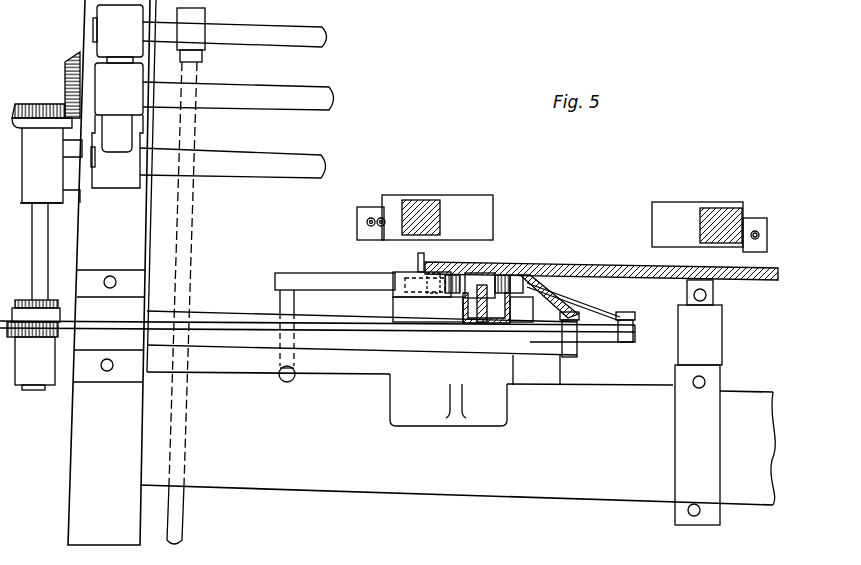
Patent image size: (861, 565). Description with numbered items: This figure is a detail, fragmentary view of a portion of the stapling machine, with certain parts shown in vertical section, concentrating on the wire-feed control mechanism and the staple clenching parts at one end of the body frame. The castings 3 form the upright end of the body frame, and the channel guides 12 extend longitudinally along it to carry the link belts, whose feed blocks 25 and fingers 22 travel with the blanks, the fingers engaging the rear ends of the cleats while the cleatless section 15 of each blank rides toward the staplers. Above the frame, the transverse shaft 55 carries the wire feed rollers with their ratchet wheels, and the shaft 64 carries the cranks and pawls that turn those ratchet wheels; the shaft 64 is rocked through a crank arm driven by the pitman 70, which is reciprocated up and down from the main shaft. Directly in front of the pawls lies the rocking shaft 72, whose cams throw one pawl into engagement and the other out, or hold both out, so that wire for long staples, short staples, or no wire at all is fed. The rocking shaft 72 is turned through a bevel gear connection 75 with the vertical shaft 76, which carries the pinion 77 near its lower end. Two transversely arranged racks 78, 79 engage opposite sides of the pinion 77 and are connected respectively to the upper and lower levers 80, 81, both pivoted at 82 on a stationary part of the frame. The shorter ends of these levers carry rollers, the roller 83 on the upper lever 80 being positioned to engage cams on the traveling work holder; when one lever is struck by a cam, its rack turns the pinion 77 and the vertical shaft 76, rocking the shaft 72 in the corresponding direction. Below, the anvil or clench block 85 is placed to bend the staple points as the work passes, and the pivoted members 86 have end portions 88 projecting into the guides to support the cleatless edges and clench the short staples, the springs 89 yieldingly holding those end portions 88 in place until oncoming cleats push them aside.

The castings 3 is at (89, 534).
The channel guides 12 is at (461, 333).
The blank section 15 is at (578, 270).
The fingers 22 is at (453, 283).
The feed blocks 25 is at (498, 280).
The transverse shaft 55 is at (322, 160).
The shaft 64 is at (326, 32).
The pitman 70 is at (190, 256).
The rocking shaft 72 is at (319, 88).
The bevel gear connection 75 is at (70, 68).
The vertical shaft 76 is at (43, 251).
The pinion 77 is at (34, 338).
The rack 78 is at (233, 340).
The rack 79 is at (233, 322).
The upper lever 80 is at (562, 308).
The lower lever 81 is at (611, 320).
The pivot 82 is at (525, 281).
The roller 83 is at (522, 276).
The anvil or clench block 85 is at (720, 312).
The pivoted members 86 is at (407, 284).
The end portions 88 is at (437, 294).
The springs 89 is at (283, 384).